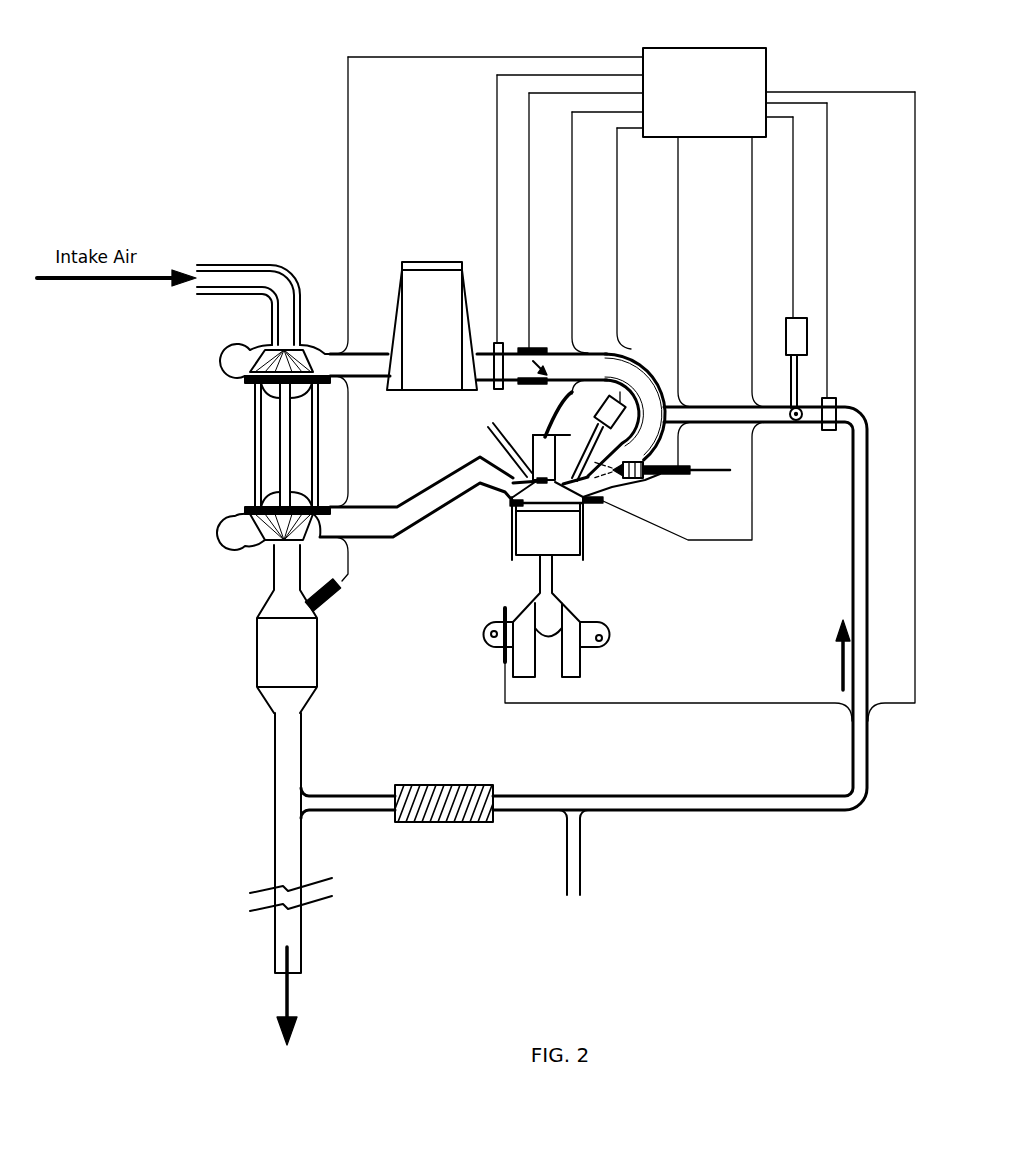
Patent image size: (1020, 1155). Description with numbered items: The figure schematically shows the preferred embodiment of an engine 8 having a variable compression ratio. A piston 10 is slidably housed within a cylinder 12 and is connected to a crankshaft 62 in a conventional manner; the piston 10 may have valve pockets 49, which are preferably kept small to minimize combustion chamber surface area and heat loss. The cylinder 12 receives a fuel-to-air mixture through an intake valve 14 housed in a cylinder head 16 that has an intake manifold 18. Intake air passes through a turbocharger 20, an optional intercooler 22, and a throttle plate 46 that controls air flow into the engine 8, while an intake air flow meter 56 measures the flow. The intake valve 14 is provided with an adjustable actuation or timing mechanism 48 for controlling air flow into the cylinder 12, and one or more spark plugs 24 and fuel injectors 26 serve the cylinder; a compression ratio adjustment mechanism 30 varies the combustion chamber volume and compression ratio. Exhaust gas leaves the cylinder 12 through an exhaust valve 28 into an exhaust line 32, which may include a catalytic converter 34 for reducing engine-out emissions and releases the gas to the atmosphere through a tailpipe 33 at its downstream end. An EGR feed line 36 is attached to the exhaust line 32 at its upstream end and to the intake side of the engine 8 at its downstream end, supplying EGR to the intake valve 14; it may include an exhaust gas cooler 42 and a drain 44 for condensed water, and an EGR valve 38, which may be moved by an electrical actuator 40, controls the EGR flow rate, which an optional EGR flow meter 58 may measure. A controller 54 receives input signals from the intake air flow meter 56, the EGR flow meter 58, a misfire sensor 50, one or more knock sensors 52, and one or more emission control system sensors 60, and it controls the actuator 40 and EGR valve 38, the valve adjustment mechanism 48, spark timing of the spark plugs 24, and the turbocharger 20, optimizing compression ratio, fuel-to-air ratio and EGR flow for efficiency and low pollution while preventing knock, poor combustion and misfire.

The engine 8 is at (180, 150).
The piston 10 is at (507, 565).
The cylinder 12 is at (585, 540).
The intake valve 14 is at (618, 490).
The cylinder head 16 is at (505, 497).
The intake manifold 18 is at (677, 440).
The turbocharger 20 is at (255, 432).
The intercooler 22 is at (402, 262).
The spark plug 24 is at (533, 437).
The fuel injector 26 is at (690, 472).
The exhaust valve 28 is at (488, 430).
The compression ratio adjustment mechanism 30 is at (580, 344).
The exhaust line 32 is at (275, 750).
The tailpipe 33 is at (276, 932).
The catalytic converter 34 is at (257, 658).
The EGR feed line 36 is at (664, 796).
The EGR valve 38 is at (797, 420).
The electrical actuator 40 is at (808, 330).
The exhaust gas cooler 42 is at (455, 823).
The drain 44 is at (582, 860).
The throttle plate 46 is at (526, 346).
The valve adjustment mechanism 48 is at (640, 390).
The valve pockets 49 is at (510, 535).
The misfire sensor 50 is at (500, 655).
The knock sensor 52 is at (603, 503).
The controller 54 is at (762, 48).
The intake air flow meter 56 is at (497, 342).
The EGR flow meter 58 is at (836, 400).
The emission control system sensor 60 is at (327, 606).
The crankshaft 62 is at (590, 645).